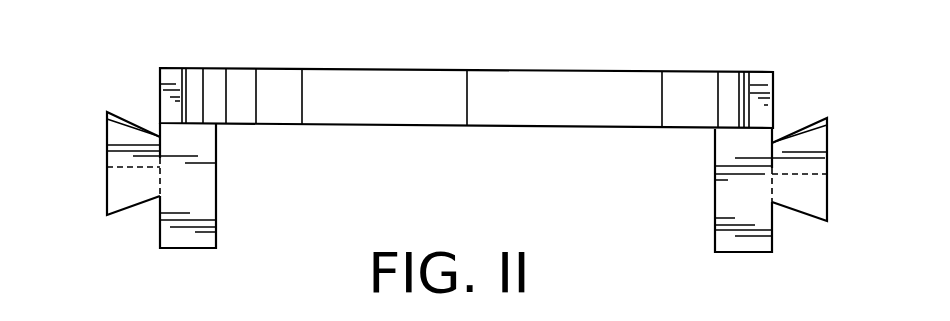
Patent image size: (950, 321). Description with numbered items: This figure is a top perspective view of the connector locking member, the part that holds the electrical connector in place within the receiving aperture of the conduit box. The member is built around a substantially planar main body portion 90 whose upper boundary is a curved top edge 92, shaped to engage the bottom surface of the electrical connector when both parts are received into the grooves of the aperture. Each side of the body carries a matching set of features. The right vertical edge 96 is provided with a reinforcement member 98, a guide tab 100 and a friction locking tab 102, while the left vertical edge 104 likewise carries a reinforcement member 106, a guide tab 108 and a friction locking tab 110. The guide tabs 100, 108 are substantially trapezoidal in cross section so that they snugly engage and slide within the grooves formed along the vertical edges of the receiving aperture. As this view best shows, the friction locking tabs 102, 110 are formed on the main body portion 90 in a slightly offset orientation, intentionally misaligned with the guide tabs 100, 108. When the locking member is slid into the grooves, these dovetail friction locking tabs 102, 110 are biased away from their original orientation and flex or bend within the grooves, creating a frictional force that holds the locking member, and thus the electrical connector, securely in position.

The main body portion 90 is at (572, 128).
The curved top edge 92 is at (432, 97).
The right vertical edge 96 is at (773, 82).
The reinforcement member 98 is at (775, 223).
The guide tab 100 is at (800, 192).
The friction locking tab 102 is at (810, 127).
The left vertical edge 104 is at (158, 80).
The reinforcement member 106 is at (216, 197).
The guide tab 108 is at (123, 183).
The friction locking tab 110 is at (118, 116).